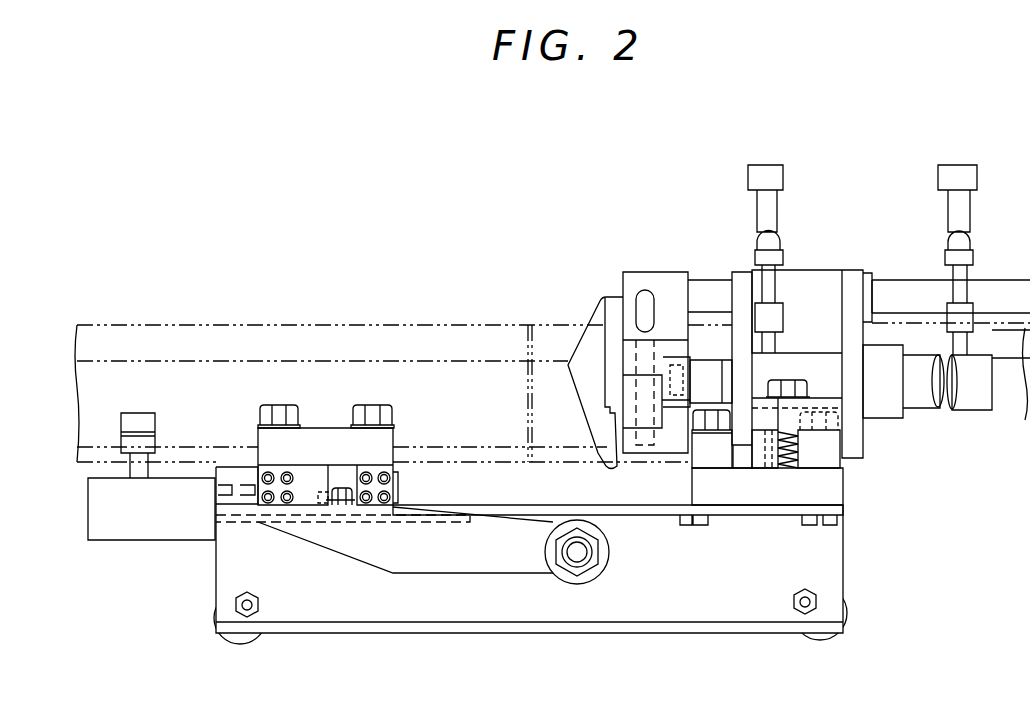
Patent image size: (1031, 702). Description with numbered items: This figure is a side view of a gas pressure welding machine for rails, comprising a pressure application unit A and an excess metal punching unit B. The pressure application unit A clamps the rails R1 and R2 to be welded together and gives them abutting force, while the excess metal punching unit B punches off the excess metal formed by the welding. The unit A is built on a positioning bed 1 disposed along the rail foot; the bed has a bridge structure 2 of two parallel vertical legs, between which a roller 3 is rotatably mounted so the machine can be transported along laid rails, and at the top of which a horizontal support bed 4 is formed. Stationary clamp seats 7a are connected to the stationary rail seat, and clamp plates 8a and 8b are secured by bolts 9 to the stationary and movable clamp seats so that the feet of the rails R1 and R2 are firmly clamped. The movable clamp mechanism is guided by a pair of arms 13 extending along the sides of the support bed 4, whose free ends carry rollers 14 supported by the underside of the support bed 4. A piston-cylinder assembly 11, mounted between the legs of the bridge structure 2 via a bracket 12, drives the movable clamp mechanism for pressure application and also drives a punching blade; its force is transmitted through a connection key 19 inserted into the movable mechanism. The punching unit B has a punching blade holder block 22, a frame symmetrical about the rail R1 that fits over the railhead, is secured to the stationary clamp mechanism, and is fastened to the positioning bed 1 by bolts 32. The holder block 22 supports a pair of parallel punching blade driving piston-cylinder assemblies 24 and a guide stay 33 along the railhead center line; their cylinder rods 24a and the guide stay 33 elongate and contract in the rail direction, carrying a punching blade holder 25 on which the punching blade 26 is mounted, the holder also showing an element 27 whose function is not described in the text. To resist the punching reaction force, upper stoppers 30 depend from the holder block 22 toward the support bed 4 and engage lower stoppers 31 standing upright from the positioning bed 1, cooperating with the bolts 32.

The positioning bed 1 is at (553, 640).
The bridge structure 2 is at (223, 570).
The roller 3 is at (216, 608).
The support bed 4 is at (645, 515).
The stationary clamp seat 7a is at (820, 485).
The clamp plate 8a is at (818, 452).
The clamp plate 8b is at (265, 440).
The bolts 9 is at (280, 408).
The piston-cylinder assembly 11 is at (133, 517).
The bracket 12 is at (221, 474).
The arms 13 is at (433, 557).
The rollers 14 is at (584, 580).
The connection key 19 is at (339, 505).
The punching blade holder block 22 is at (847, 280).
The punching blade driving piston-cylinder assemblies 24 is at (920, 365).
The cylinder rods 24a is at (711, 373).
The punching blade holder 25 is at (676, 281).
The punching blade 26 is at (598, 330).
The slot 27 is at (645, 299).
The upper stoppers 30 is at (740, 468).
The lower stoppers 31 is at (767, 468).
The bolts 32 is at (808, 380).
The guide stay 33 is at (918, 300).
The pressure application unit A is at (326, 384).
The excess metal punching unit B is at (838, 229).
The rail R1 is at (547, 325).
The rail R2 is at (404, 325).